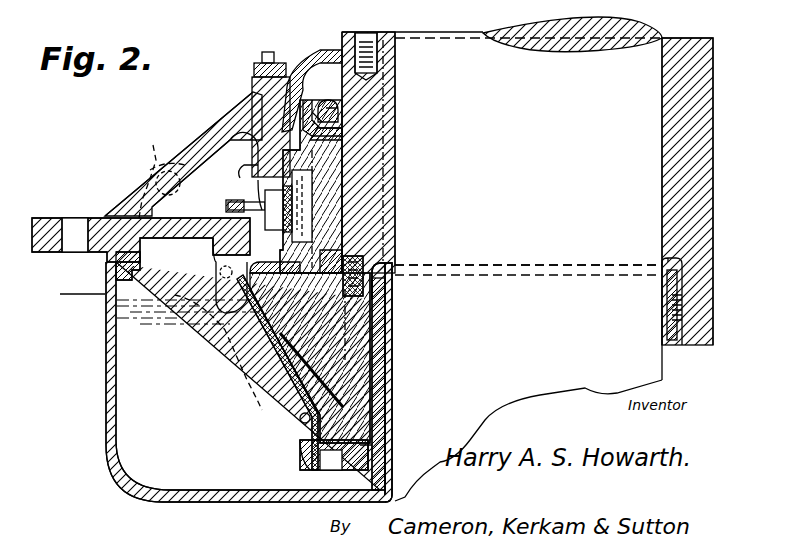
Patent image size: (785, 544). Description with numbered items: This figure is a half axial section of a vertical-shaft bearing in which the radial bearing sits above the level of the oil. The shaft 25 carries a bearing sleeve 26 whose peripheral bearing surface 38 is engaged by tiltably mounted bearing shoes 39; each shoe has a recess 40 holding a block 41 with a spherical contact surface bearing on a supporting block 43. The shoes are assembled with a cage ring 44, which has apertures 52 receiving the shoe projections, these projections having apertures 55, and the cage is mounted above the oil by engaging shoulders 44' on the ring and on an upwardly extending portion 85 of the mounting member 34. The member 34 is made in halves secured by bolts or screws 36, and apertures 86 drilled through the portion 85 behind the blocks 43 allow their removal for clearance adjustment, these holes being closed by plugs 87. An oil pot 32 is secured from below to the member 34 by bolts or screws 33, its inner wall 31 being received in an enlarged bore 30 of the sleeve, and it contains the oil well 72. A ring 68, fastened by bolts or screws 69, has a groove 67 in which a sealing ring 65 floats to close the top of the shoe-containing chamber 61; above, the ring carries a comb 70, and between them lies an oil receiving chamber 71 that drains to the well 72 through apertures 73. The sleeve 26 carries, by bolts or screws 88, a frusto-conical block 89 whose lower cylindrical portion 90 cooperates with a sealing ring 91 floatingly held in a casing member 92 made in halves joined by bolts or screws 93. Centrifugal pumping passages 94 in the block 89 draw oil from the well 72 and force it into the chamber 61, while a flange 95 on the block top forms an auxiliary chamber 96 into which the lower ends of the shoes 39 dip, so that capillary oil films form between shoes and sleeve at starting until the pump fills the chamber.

The shaft 25 is at (654, 59).
The bearing sleeve 26 is at (396, 205).
The enlarged bore 30 is at (376, 352).
The inner wall 31 is at (672, 316).
The oil pot 32 is at (195, 497).
The bolts or screws 33 is at (107, 303).
The mounting member 34 is at (188, 228).
The bolts or screws 36 is at (156, 160).
The peripheral bearing surface 38 is at (376, 200).
The bearing shoes 39 is at (322, 262).
The recess 40 is at (318, 195).
The block 41 is at (312, 234).
The supporting block 43 is at (214, 280).
The cage ring 44 is at (362, 189).
The shoulders 44' is at (228, 172).
The apertures 52 is at (300, 273).
The apertures 55 is at (336, 168).
The chamber 61 is at (340, 151).
The sealing ring 65 is at (332, 143).
The groove 67 is at (325, 130).
The ring 68 is at (299, 58).
The bolts or screws 69 is at (266, 58).
The comb 70 is at (332, 50).
The oil receiving chamber 71 is at (258, 77).
The oil well 72 is at (128, 385).
The apertures 73 is at (252, 115).
The upwardly extending portion 85 is at (266, 160).
The apertures 86 is at (258, 200).
The plugs 87 is at (226, 207).
The bolts or screws 88 is at (378, 320).
The block 89 is at (397, 337).
The cylindrical portion 90 is at (362, 442).
The sealing ring 91 is at (328, 458).
The casing member 92 is at (293, 328).
The bolts or screws 93 is at (300, 422).
The centrifugal pumping passages 94 is at (342, 397).
The flange 95 is at (240, 287).
The chamber 96 is at (258, 262).